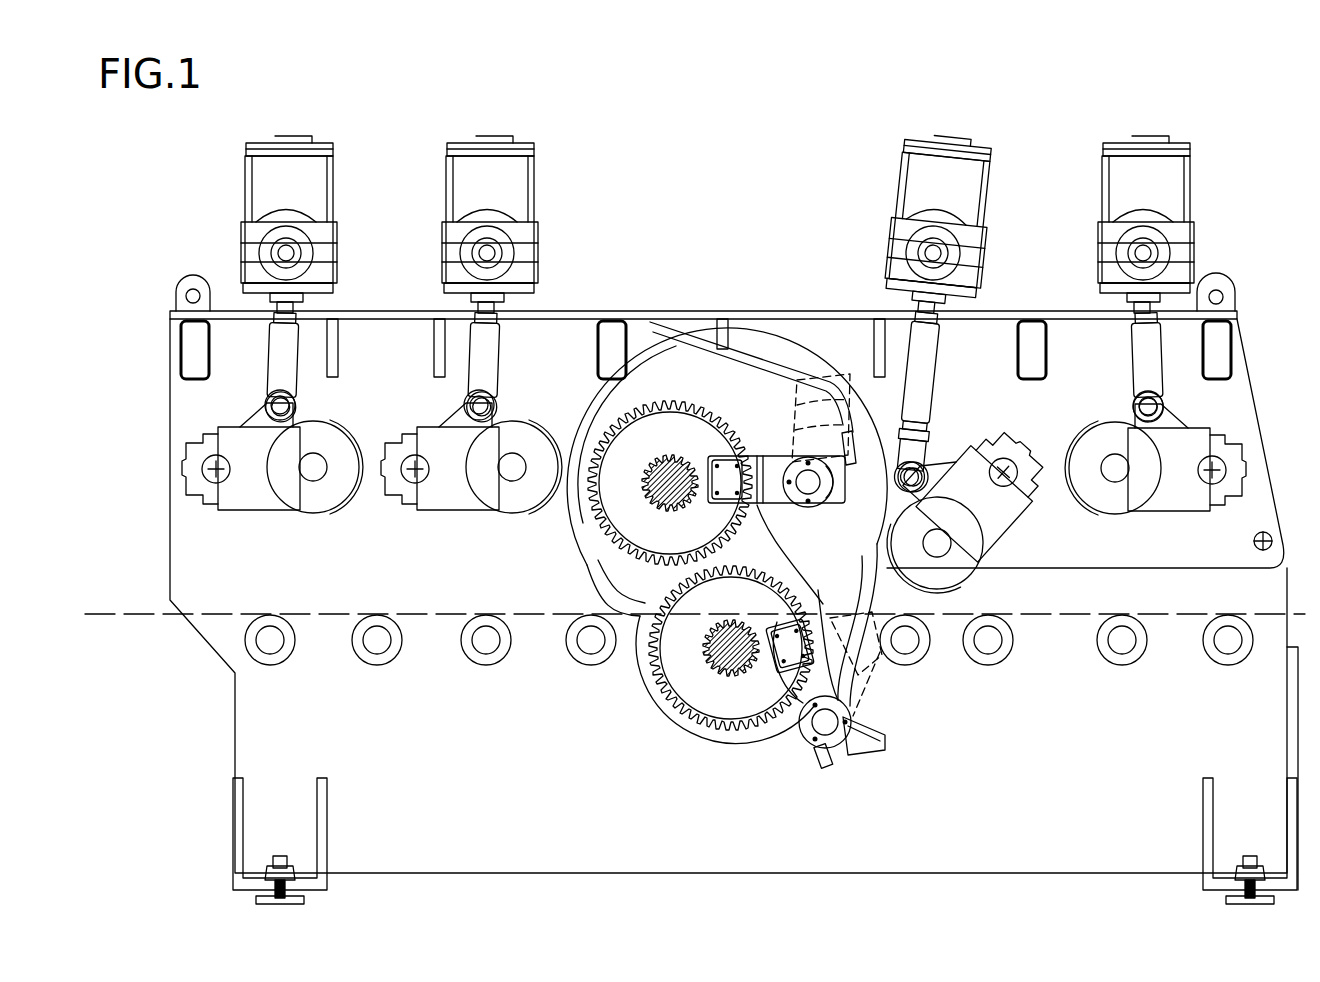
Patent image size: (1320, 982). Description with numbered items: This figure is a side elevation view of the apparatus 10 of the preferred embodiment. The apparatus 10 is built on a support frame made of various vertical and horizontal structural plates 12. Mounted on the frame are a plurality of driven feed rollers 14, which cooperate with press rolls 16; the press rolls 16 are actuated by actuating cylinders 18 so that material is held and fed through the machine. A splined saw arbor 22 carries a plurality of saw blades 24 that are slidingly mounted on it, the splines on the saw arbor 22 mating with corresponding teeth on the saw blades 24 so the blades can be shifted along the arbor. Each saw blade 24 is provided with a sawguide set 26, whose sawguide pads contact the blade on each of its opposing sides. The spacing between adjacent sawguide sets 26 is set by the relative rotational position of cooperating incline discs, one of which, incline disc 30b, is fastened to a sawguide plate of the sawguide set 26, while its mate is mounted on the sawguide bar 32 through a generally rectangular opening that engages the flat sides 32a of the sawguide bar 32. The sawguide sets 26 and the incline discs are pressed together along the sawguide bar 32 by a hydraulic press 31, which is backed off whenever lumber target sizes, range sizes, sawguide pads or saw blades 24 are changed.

The apparatus 10 is at (672, 195).
The structural plates 12 is at (190, 572).
The driven feed rollers 14 is at (370, 664).
The press rolls 16 is at (330, 420).
The actuating cylinders 18 is at (505, 182).
The splined saw arbor 22 is at (668, 455).
The saw blades 24 is at (612, 507).
The sawguide set 26 is at (727, 468).
The incline disc 30b is at (790, 520).
The hydraulic press 31 is at (840, 495).
The sawguide bar 32 is at (808, 505).
The flat sides 32a is at (818, 492).